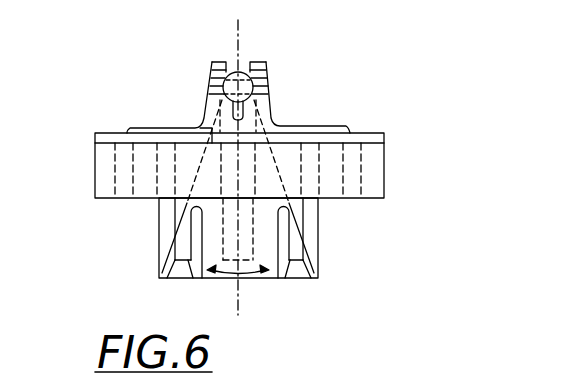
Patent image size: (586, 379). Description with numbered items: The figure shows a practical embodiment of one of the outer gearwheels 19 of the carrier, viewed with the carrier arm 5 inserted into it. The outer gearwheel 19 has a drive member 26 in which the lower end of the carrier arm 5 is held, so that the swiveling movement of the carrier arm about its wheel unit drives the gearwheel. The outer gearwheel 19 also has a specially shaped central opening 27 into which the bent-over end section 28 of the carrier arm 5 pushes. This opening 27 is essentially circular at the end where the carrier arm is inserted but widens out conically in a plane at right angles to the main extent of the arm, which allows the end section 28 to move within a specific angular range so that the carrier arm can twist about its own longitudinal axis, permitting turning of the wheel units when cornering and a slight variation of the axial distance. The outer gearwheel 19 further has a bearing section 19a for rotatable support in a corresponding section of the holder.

The carrier arm 5 is at (255, 68).
The drive member 26 is at (268, 101).
The central opening 27 is at (218, 144).
The outer gearwheel 19 is at (375, 153).
The bent-over end section 28 is at (258, 223).
The bearing section 19a is at (158, 263).